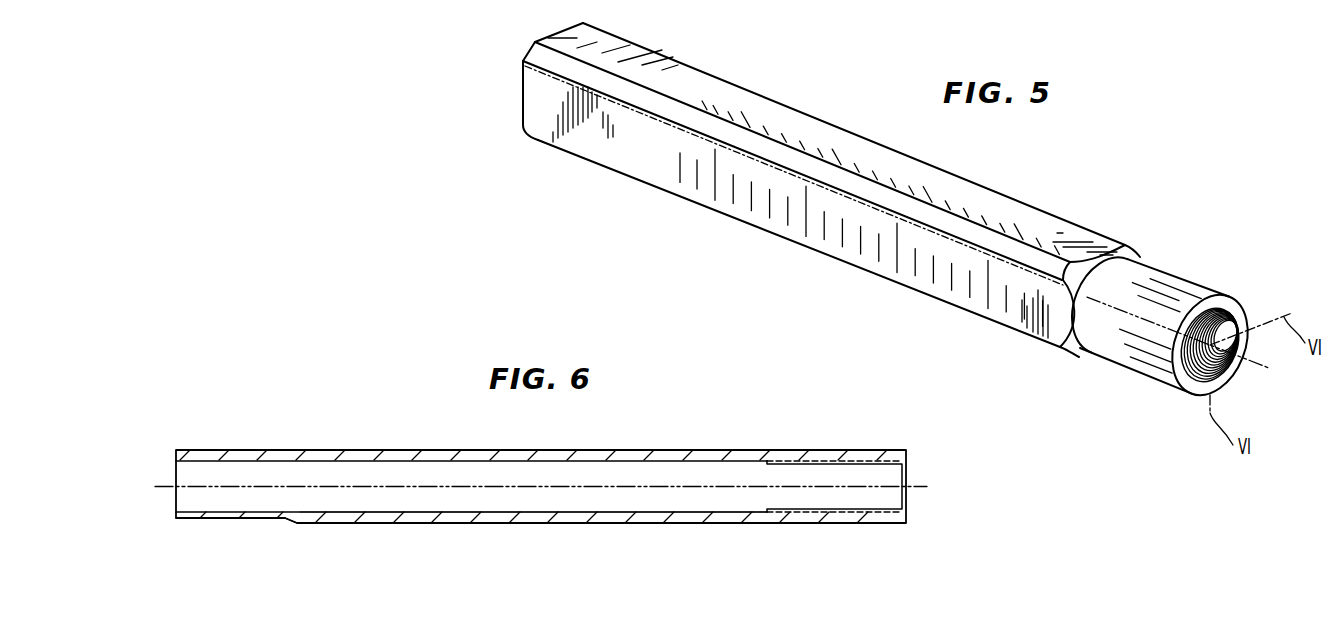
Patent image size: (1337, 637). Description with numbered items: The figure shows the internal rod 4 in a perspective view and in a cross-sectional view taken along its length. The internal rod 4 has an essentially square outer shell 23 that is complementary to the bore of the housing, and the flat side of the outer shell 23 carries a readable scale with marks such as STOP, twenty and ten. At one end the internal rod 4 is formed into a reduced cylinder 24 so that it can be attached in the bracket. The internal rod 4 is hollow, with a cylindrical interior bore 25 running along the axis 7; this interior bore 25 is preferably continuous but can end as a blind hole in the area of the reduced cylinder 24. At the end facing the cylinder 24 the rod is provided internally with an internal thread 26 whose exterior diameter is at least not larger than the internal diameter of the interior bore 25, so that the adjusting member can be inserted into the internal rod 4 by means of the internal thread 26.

In FIG. 5, the internal rod 4 is at (668, 65).
In FIG. 6, the internal rod 4 is at (470, 455).
In FIG. 6, the axis 7 is at (370, 487).
In FIG. 6, the outer shell 23 is at (548, 520).
In FIG. 6, the cylinder 24 is at (235, 518).
In FIG. 6, the interior bore 25 is at (462, 502).
In FIG. 6, the internal thread 26 is at (823, 465).